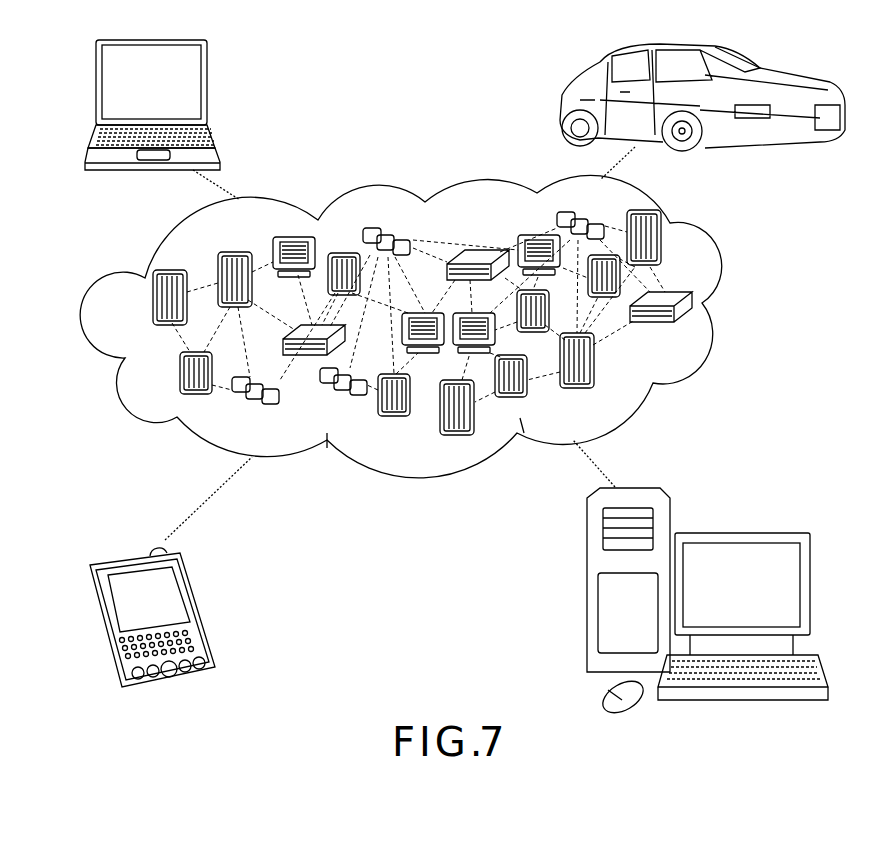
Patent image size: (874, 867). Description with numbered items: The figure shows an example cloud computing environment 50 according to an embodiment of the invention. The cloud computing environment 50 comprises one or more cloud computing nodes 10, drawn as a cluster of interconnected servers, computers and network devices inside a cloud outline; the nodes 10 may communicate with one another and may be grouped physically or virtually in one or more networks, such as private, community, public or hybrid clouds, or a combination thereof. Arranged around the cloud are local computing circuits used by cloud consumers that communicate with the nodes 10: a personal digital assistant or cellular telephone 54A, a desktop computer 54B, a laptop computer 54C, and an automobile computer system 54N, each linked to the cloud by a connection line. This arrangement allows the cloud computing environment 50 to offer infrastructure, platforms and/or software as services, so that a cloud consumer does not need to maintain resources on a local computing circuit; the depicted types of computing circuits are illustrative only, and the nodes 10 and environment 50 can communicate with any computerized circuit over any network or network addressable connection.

The cloud computing node 10 is at (690, 328).
The cloud computing environment 50 is at (742, 305).
The personal digital assistant (PDA) or cellular telephone 54A is at (203, 605).
The desktop computer 54B is at (740, 532).
The laptop computer 54C is at (207, 90).
The automobile computer system 54N is at (560, 108).